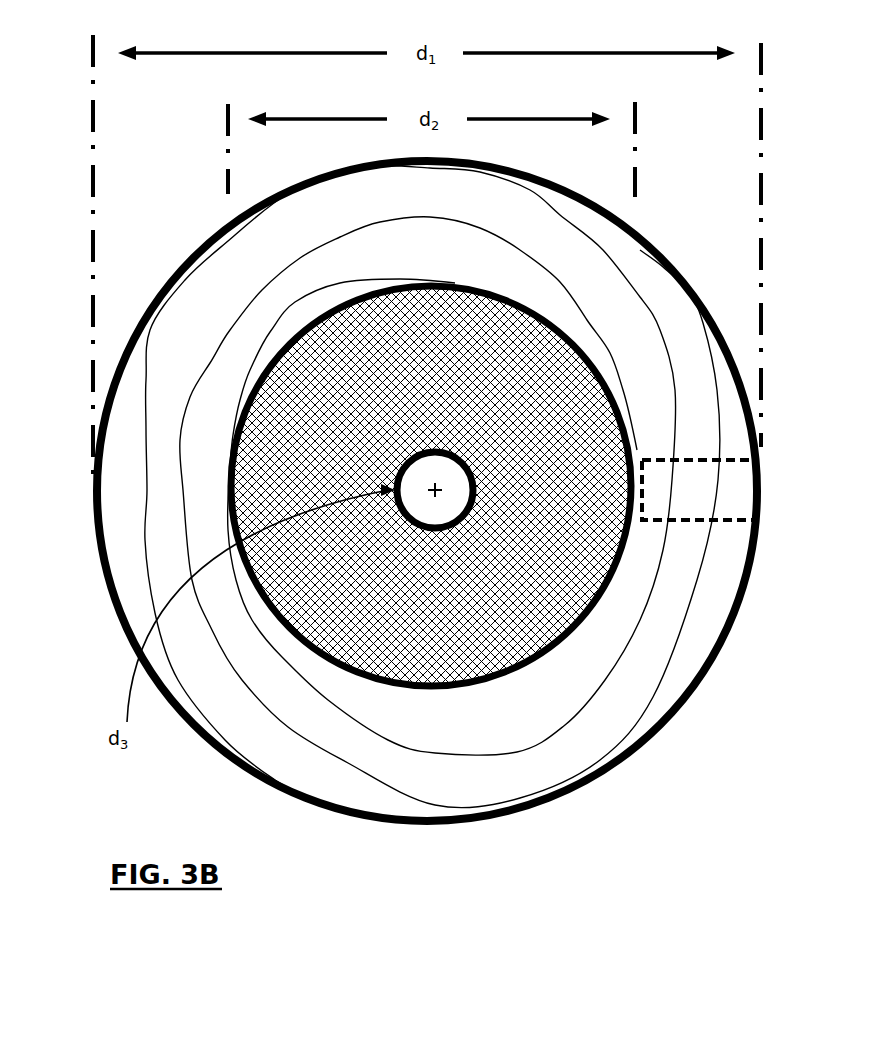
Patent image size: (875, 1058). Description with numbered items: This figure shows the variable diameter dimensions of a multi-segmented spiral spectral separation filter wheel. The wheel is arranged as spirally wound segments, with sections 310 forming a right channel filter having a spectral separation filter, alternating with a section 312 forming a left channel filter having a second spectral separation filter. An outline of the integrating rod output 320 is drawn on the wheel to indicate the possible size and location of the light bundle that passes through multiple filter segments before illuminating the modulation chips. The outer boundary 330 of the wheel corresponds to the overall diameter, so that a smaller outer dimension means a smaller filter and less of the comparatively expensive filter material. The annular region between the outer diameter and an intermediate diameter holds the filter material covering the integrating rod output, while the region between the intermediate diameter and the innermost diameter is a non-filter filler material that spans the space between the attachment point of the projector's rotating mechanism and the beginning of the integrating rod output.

The sections 310 is at (454, 512).
The section 312 is at (411, 479).
The integrating rod output 320 is at (760, 477).
The outer casing 330 is at (751, 648).